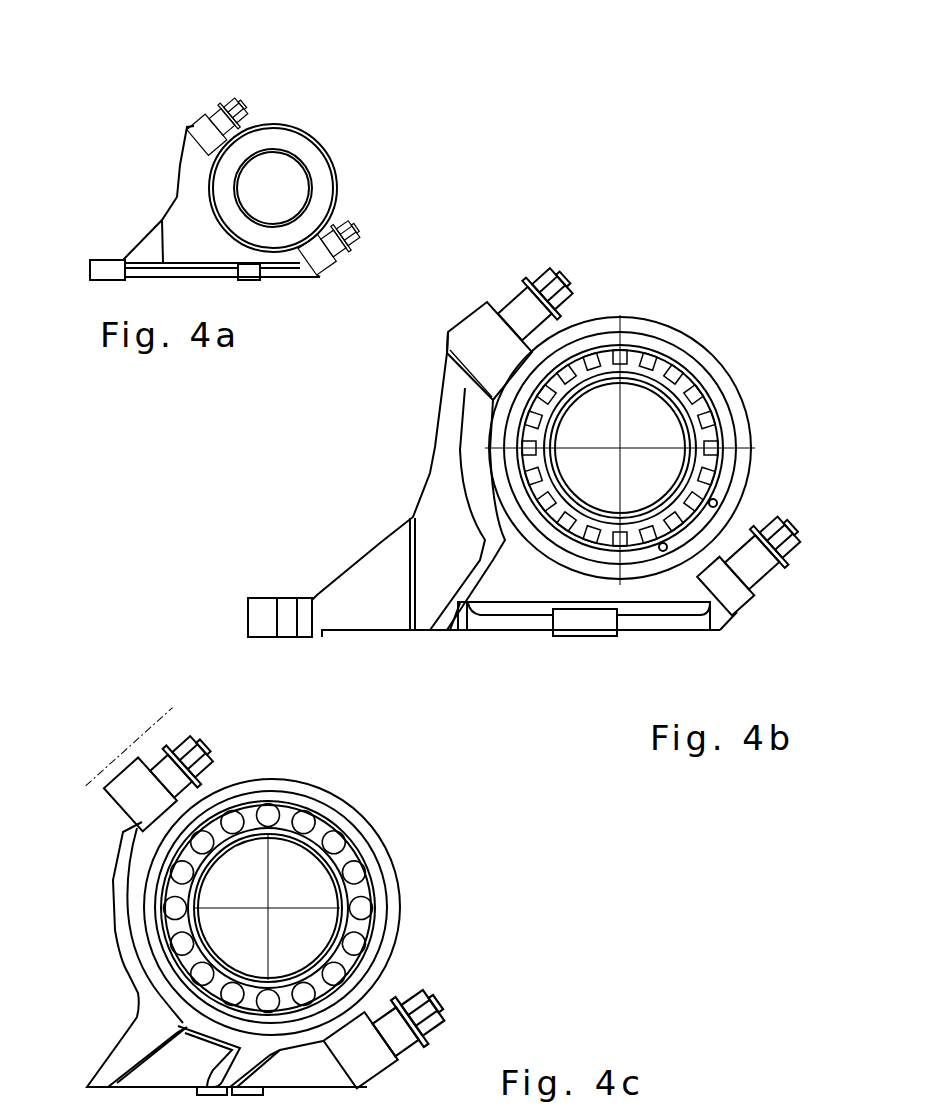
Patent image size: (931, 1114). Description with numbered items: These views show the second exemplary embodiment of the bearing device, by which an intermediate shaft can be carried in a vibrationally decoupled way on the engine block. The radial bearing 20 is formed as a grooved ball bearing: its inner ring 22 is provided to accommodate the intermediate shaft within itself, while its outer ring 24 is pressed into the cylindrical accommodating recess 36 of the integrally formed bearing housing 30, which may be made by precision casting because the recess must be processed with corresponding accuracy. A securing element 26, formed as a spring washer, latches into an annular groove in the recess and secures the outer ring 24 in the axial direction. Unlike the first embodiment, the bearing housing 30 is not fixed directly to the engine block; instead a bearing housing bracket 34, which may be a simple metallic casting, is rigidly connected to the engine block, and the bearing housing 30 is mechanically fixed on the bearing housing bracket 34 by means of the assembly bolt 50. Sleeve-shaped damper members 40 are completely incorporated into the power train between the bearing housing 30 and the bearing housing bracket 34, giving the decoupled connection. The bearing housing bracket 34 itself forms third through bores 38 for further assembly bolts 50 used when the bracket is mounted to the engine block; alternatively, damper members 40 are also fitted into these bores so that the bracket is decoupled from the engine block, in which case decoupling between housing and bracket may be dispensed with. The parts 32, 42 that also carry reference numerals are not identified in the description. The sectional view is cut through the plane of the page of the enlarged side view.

In FIG. 4A, the radial bearing 20 is at (307, 147).
In FIG. 4C, the inner ring 22 is at (300, 825).
In FIG. 4C, the outer ring 24 is at (363, 853).
In FIG. 4B, the securing element 26 is at (717, 493).
In FIG. 4A, the bearing housing 30 is at (335, 158).
In FIG. 4B, the bearing housing 30 is at (700, 345).
In FIG. 4C, the bearing housing 30 is at (277, 790).
In FIG. 4B, the mounting flange 32 is at (630, 426).
In FIG. 4C, the mounting flange 32 is at (220, 783).
In FIG. 4A, the bearing housing bracket 34 is at (205, 132).
In FIG. 4B, the bearing housing bracket 34 is at (447, 462).
In FIG. 4C, the bearing housing bracket 34 is at (120, 930).
In FIG. 4C, the accommodating recess 36 is at (378, 880).
In FIG. 4B, the third through bores 38 is at (280, 590).
In FIG. 4A, the damper members 40 is at (223, 100).
In FIG. 4B, the damper members 40 is at (517, 277).
In FIG. 4C, the damper members 40 is at (177, 757).
In FIG. 4B, the clamp 42 is at (560, 262).
In FIG. 4C, the clamp 42 is at (147, 762).
In FIG. 4A, the assembly bolt 50 is at (250, 100).
In FIG. 4B, the assembly bolt 50 is at (565, 277).
In FIG. 4C, the assembly bolt 50 is at (197, 740).